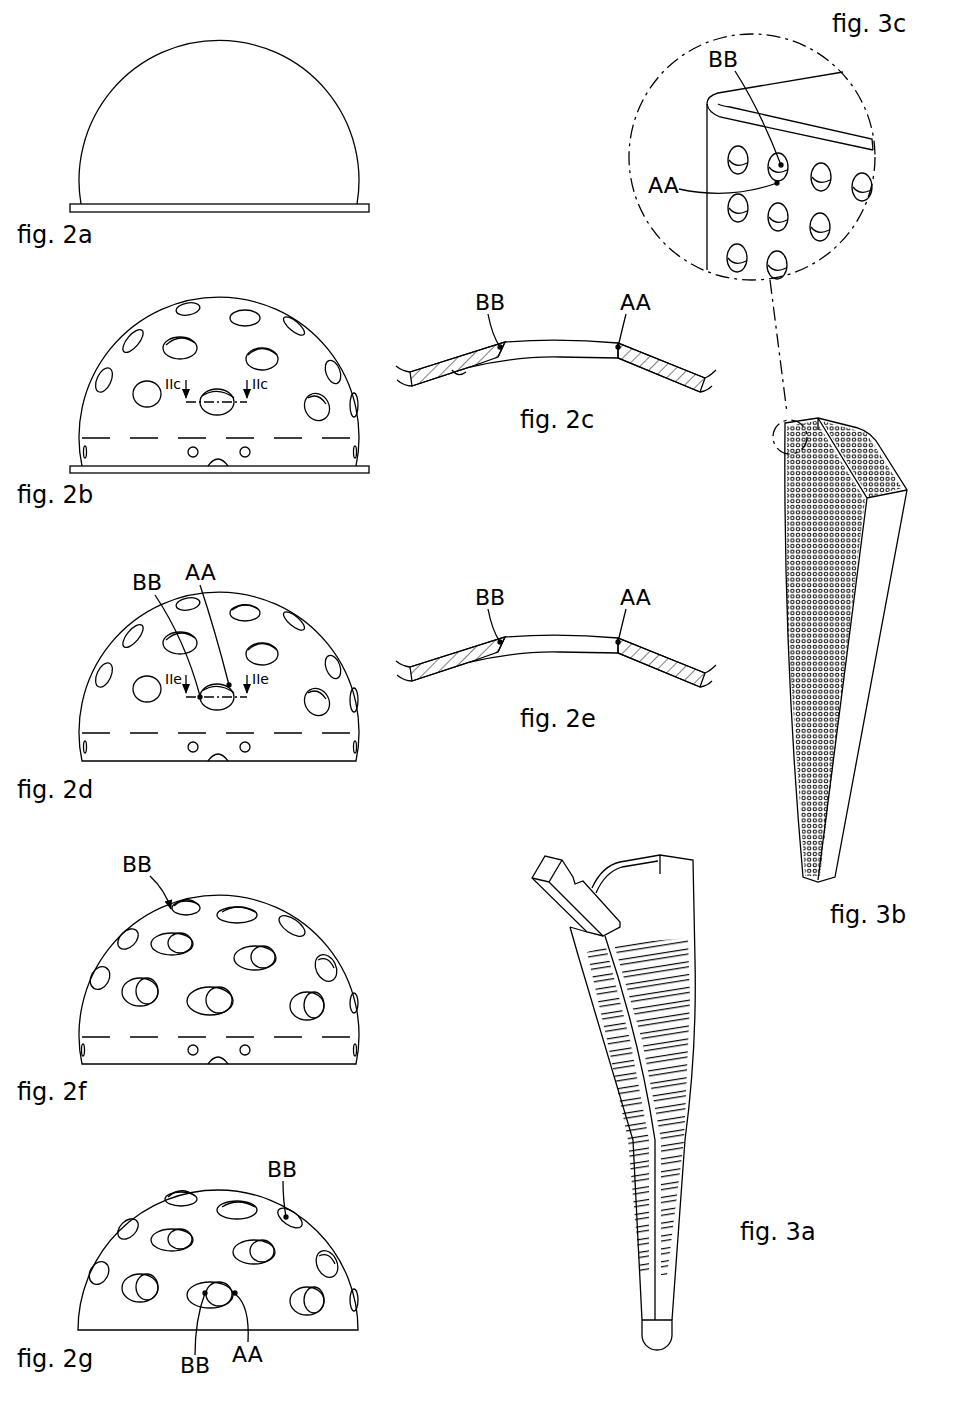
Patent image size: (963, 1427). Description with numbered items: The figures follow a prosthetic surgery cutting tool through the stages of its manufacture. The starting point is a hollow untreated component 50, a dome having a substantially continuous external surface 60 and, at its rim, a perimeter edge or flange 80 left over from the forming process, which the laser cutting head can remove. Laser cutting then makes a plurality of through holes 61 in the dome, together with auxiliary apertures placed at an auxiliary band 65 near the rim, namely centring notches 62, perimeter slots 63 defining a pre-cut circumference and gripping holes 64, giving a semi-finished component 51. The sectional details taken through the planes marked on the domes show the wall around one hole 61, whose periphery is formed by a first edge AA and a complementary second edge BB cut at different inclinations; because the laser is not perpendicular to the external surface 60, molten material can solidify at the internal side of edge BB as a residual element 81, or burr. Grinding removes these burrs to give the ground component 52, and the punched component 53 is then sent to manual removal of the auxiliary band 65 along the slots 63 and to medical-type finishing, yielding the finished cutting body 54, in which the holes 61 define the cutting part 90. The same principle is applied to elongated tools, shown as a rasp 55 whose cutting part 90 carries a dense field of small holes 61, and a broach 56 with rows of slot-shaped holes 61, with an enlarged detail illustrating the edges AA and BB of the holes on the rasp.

In FIG. 2A, the untreated component 50 is at (246, 109).
In FIG. 2A, the external surface 60 is at (314, 64).
In FIG. 2A, the flange 80 is at (364, 211).
In FIG. 2B, the semi-finished component 51 is at (94, 371).
In FIG. 2D, the ground component 52 is at (93, 666).
In FIG. 2F, the punched component 53 is at (92, 969).
In FIG. 2G, the cutting body 54 is at (91, 1261).
In FIG. 3B, the rasp 55 is at (807, 650).
In FIG. 3A, the broach 56 is at (654, 1102).
In FIG. 2B, the through hole 61 is at (260, 357).
In FIG. 2C, the through hole 61 is at (582, 352).
In FIG. 2D, the through hole 61 is at (249, 612).
In FIG. 2E, the through hole 61 is at (582, 647).
In FIG. 2F, the through hole 61 is at (272, 956).
In FIG. 2G, the through hole 61 is at (333, 1265).
In FIG. 3C, the through hole 61 is at (820, 234).
In FIG. 3B, the through hole 61 is at (790, 522).
In FIG. 3A, the through hole 61 is at (598, 970).
In FIG. 2B, the centring notch 62 is at (219, 462).
In FIG. 2D, the centring notch 62 is at (219, 757).
In FIG. 2F, the centring notch 62 is at (218, 1060).
In FIG. 2B, the perimeter slot 63 is at (130, 438).
In FIG. 2D, the perimeter slot 63 is at (316, 733).
In FIG. 2F, the perimeter slot 63 is at (315, 1037).
In FIG. 2B, the gripping hole 64 is at (247, 452).
In FIG. 2D, the gripping hole 64 is at (247, 747).
In FIG. 2F, the gripping hole 64 is at (190, 1050).
In FIG. 2B, the auxiliary band 65 is at (371, 451).
In FIG. 2D, the auxiliary band 65 is at (371, 747).
In FIG. 2F, the auxiliary band 65 is at (370, 1049).
In FIG. 2C, the residual element 81 is at (458, 372).
In FIG. 2F, the cutting part 90 is at (110, 1001).
In FIG. 2G, the cutting part 90 is at (110, 1294).
In FIG. 3B, the cutting part 90 is at (774, 573).
In FIG. 3A, the cutting part 90 is at (629, 1109).